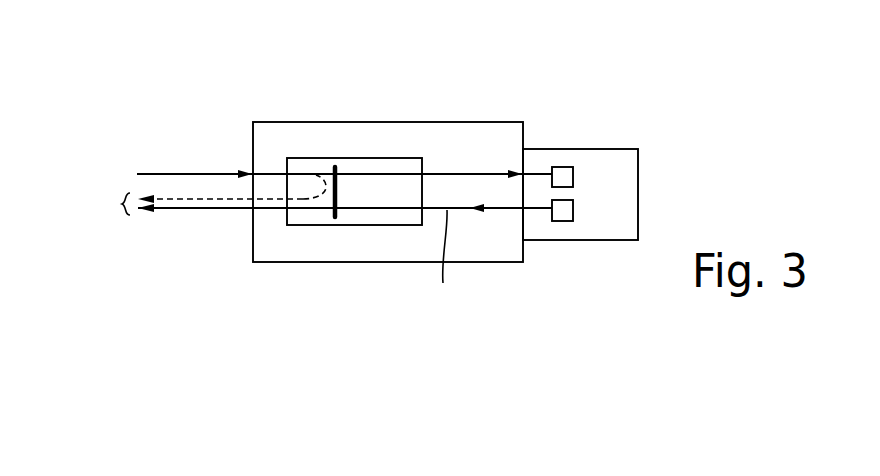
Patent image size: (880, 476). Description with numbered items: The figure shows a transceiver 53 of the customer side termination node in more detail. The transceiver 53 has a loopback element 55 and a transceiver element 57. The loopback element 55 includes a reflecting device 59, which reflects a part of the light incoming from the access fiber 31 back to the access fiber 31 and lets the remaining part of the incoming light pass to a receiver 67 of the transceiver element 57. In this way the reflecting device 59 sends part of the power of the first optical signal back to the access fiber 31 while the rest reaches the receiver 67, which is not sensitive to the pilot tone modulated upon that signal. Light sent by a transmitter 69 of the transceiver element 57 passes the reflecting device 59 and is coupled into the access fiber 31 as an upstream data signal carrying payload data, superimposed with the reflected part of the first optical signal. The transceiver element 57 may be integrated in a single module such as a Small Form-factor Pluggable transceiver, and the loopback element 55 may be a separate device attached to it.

The transceiver 53 is at (162, 103).
The access fiber 31 is at (203, 158).
The loopback element 55 is at (364, 121).
The transceiver element 57 is at (610, 149).
The reflecting device 59 is at (356, 225).
The receiver 67 is at (563, 167).
The transmitter 69 is at (563, 221).